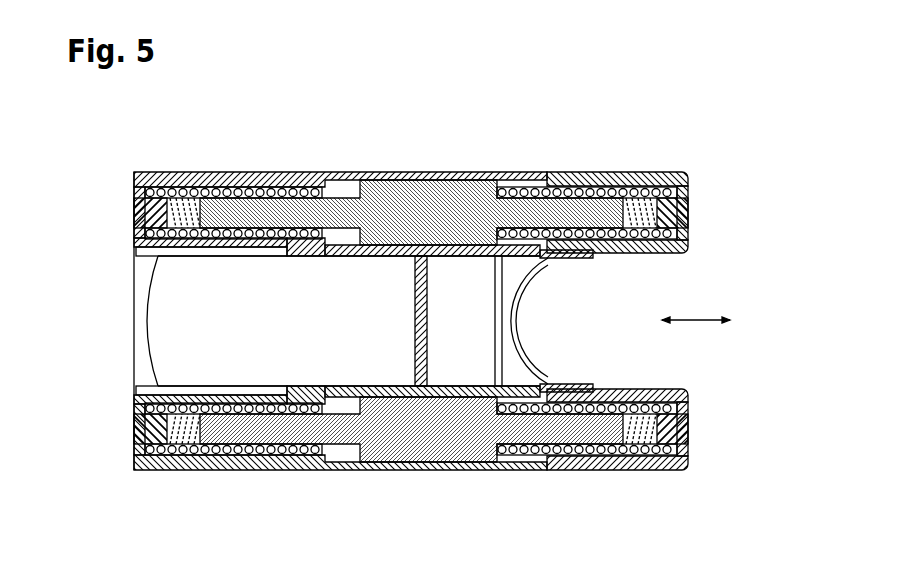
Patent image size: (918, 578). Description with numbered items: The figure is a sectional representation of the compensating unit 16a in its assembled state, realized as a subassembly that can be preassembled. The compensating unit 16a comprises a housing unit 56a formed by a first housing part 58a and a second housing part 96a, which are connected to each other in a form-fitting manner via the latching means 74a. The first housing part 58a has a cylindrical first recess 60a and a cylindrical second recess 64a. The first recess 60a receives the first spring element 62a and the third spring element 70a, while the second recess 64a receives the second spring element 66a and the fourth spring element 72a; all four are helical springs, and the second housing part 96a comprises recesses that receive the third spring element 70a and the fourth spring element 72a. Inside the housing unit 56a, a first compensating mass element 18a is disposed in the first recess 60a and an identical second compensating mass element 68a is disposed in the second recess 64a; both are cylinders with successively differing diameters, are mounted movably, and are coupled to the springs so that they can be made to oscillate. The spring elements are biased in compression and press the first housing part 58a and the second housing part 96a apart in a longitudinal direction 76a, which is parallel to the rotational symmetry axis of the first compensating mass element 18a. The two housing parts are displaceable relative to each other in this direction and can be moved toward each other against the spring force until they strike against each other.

The compensating unit 16a is at (706, 203).
The first compensating mass element 18a is at (411, 190).
The housing unit 56a is at (108, 201).
The first housing part 58a is at (293, 172).
The first recess 60a is at (286, 386).
The first spring element 62a is at (231, 172).
The second recess 64a is at (251, 470).
The second spring element 66a is at (222, 386).
The second compensating mass element 68a is at (418, 470).
The third spring element 70a is at (577, 185).
The fourth spring element 72a is at (633, 470).
The latching means 74a is at (592, 258).
The longitudinal direction 76a is at (700, 322).
The second housing part 96a is at (638, 185).